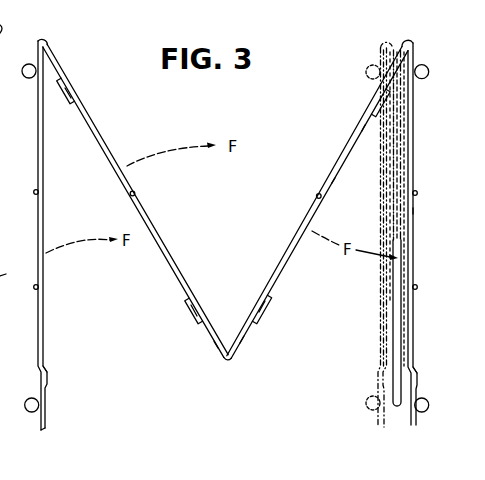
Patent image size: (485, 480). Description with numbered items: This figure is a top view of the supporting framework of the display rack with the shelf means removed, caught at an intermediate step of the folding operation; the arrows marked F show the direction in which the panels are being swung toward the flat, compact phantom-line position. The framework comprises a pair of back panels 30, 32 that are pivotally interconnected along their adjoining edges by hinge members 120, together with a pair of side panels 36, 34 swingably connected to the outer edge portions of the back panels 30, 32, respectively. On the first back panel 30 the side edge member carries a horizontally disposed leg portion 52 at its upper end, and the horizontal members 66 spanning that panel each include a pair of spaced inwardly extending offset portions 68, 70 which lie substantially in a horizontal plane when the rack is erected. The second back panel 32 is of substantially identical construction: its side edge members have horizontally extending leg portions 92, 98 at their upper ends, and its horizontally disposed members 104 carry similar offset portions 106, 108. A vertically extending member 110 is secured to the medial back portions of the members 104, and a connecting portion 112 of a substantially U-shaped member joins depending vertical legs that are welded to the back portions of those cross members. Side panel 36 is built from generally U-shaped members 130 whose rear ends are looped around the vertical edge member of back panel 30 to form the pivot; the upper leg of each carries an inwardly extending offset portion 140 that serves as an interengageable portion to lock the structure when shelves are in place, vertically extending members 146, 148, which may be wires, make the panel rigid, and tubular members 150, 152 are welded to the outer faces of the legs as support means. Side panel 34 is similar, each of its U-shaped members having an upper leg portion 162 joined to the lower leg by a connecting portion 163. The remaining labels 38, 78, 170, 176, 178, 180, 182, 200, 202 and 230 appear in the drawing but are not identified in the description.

The first back panel 30 is at (165, 225).
The second back panel 32 is at (281, 248).
The side panel 34 is at (420, 245).
The side panel 36 is at (48, 316).
The lower hook portion of first arm 38 is at (177, 267).
The horizontally disposed leg portion 52 is at (76, 93).
The horizontal member 66 is at (212, 341).
The inwardly extending offset portion 68 is at (71, 105).
The inwardly extending offset portion 70 is at (186, 319).
The aperture in first arm 78 is at (116, 175).
The horizontally extending leg portion 92 is at (266, 296).
The horizontally extending leg portion 98 is at (357, 131).
The horizontally disposed member 104 is at (252, 338).
The inwardly extending offset portion 106 is at (272, 318).
The inwardly extending offset portion 108 is at (386, 113).
The vertically extending member 110 is at (315, 195).
The connecting portion 112 is at (334, 182).
The hinge member 120 is at (227, 366).
The U-shaped member 130 is at (44, 431).
The inwardly extending offset portion 140 is at (47, 376).
The vertically extending member 146 is at (37, 190).
The vertically extending member 148 is at (35, 290).
The tubular member 150 is at (29, 64).
The tubular member 152 is at (24, 407).
The upper leg portion 162 is at (416, 210).
The connecting portion 163 is at (17, 264).
The offset in right member 170 is at (414, 374).
The upper aperture in right member 176 is at (418, 191).
The lower aperture in right member 178 is at (419, 291).
The upper right fastener 180 is at (426, 65).
The lower right fastener 182 is at (425, 413).
The panel 200 is at (17, 68).
The panel flange 202 is at (17, 121).
The wall 230 is at (17, 221).